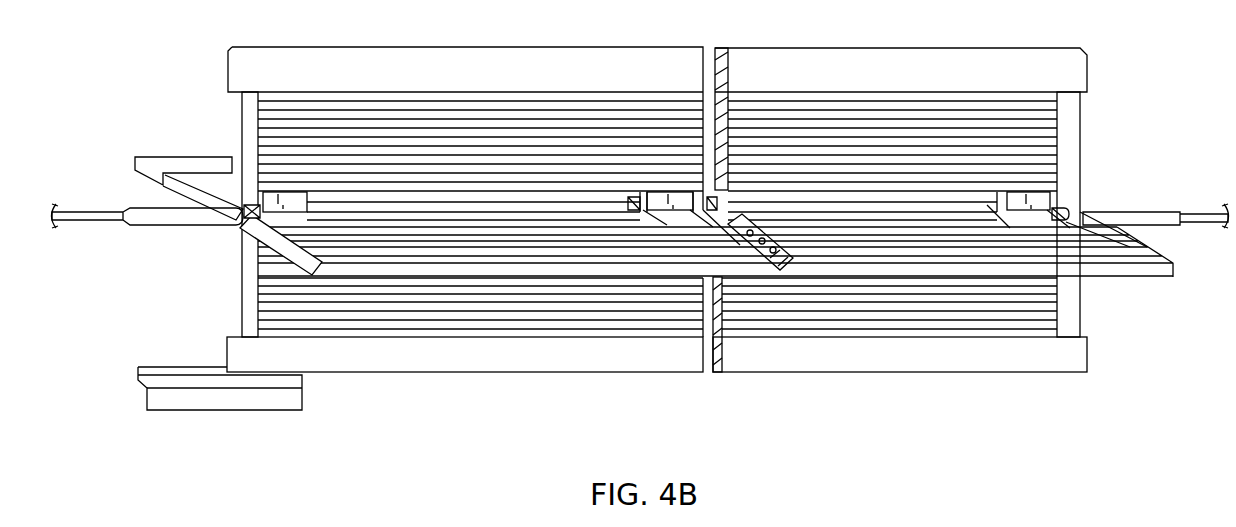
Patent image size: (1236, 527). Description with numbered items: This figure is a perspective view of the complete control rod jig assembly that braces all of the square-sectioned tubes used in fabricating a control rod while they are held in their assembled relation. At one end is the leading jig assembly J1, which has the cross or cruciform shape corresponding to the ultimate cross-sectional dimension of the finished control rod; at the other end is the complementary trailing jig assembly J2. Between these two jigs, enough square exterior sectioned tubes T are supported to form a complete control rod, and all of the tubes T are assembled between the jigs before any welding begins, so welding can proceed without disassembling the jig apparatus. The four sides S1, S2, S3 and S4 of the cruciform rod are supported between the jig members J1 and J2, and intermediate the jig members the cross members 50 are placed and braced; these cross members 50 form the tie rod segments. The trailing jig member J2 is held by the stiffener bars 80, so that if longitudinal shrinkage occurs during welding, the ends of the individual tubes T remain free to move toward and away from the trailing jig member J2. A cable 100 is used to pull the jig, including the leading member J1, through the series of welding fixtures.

The stiffener bars 80 is at (661, 62).
The cross members 50 is at (245, 220).
The side S4 is at (260, 118).
The side S3 is at (220, 177).
The side S2 is at (290, 247).
The side S1 is at (263, 302).
The trailing jig assembly J2 is at (243, 230).
The leading jig assembly J1 is at (1073, 213).
The square exterior sectioned tubes T is at (1053, 312).
The cable 100 is at (165, 364).